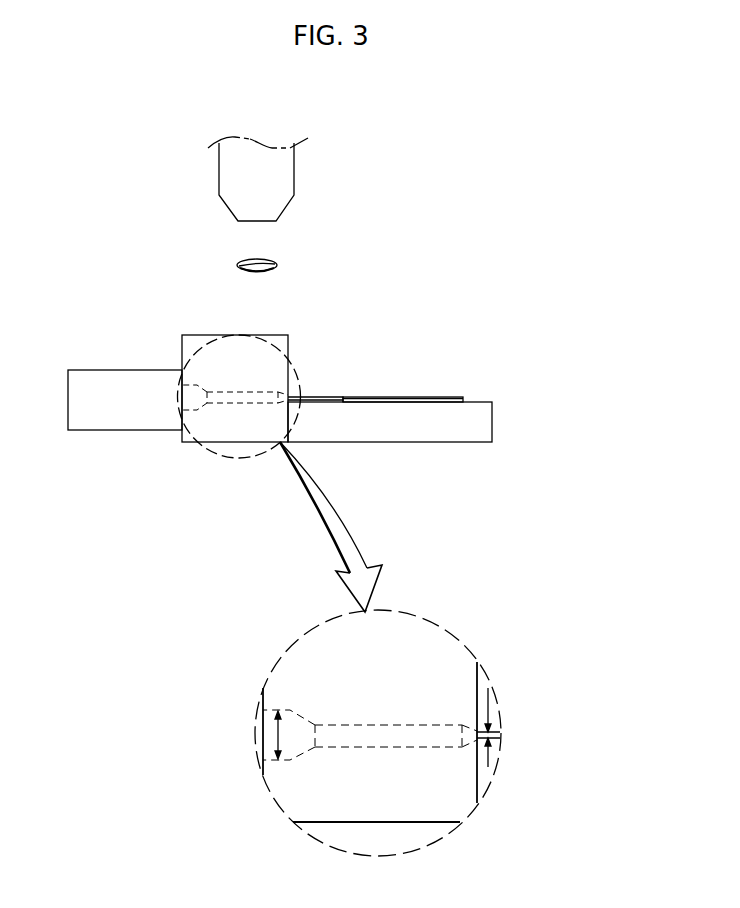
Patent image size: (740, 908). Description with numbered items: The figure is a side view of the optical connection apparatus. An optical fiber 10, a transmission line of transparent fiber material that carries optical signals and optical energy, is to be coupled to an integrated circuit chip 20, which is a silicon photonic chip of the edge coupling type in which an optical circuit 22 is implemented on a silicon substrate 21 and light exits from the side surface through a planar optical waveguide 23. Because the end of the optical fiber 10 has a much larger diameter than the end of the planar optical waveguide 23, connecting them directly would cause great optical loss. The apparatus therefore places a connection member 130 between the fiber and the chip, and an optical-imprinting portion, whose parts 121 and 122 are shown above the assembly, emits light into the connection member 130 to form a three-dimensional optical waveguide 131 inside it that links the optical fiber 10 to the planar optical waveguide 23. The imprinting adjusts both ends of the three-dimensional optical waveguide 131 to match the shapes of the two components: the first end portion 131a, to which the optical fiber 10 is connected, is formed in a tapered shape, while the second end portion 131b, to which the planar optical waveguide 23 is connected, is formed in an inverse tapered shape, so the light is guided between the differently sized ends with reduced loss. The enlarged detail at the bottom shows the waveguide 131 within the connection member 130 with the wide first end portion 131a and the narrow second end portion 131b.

The optical fiber 10 is at (123, 410).
The integrated circuit chip 20 is at (457, 423).
The silicon substrate 21 is at (458, 430).
The optical circuit 22 is at (435, 397).
The planar optical waveguide 23 is at (327, 397).
The holder cap 121 is at (278, 178).
The lens 122 is at (277, 263).
The connection member 130 is at (465, 793).
The 3D optical waveguide 131 is at (387, 748).
The first end portion 131a is at (297, 752).
The second end portion 131b is at (473, 723).